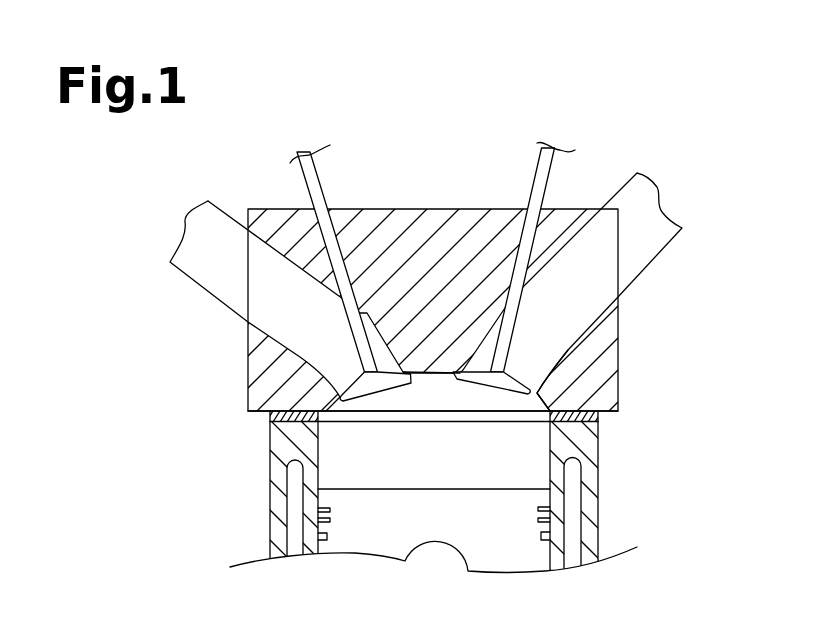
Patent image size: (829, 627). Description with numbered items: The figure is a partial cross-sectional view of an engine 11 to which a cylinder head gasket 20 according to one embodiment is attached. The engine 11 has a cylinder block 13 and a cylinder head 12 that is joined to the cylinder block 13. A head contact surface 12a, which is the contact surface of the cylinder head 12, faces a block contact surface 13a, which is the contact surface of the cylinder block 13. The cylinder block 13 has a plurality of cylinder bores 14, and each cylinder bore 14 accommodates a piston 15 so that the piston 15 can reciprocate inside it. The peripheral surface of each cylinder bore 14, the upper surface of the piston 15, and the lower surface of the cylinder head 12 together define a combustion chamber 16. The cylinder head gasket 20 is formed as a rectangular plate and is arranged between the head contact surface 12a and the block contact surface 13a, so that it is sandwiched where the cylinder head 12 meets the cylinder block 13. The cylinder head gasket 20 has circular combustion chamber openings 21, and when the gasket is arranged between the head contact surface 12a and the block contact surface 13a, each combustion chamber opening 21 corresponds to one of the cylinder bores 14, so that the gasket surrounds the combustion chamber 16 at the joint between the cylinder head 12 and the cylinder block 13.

The engine 11 is at (438, 384).
The cylinder head 12 is at (618, 337).
The head contact surface 12a is at (272, 412).
The cylinder block 13 is at (597, 498).
The block contact surface 13a is at (276, 422).
The cylinder bore 14 is at (500, 450).
The piston 15 is at (402, 502).
The combustion chamber 16 is at (363, 458).
The cylinder head gasket 20 is at (612, 421).
The combustion chamber opening 21 is at (563, 397).